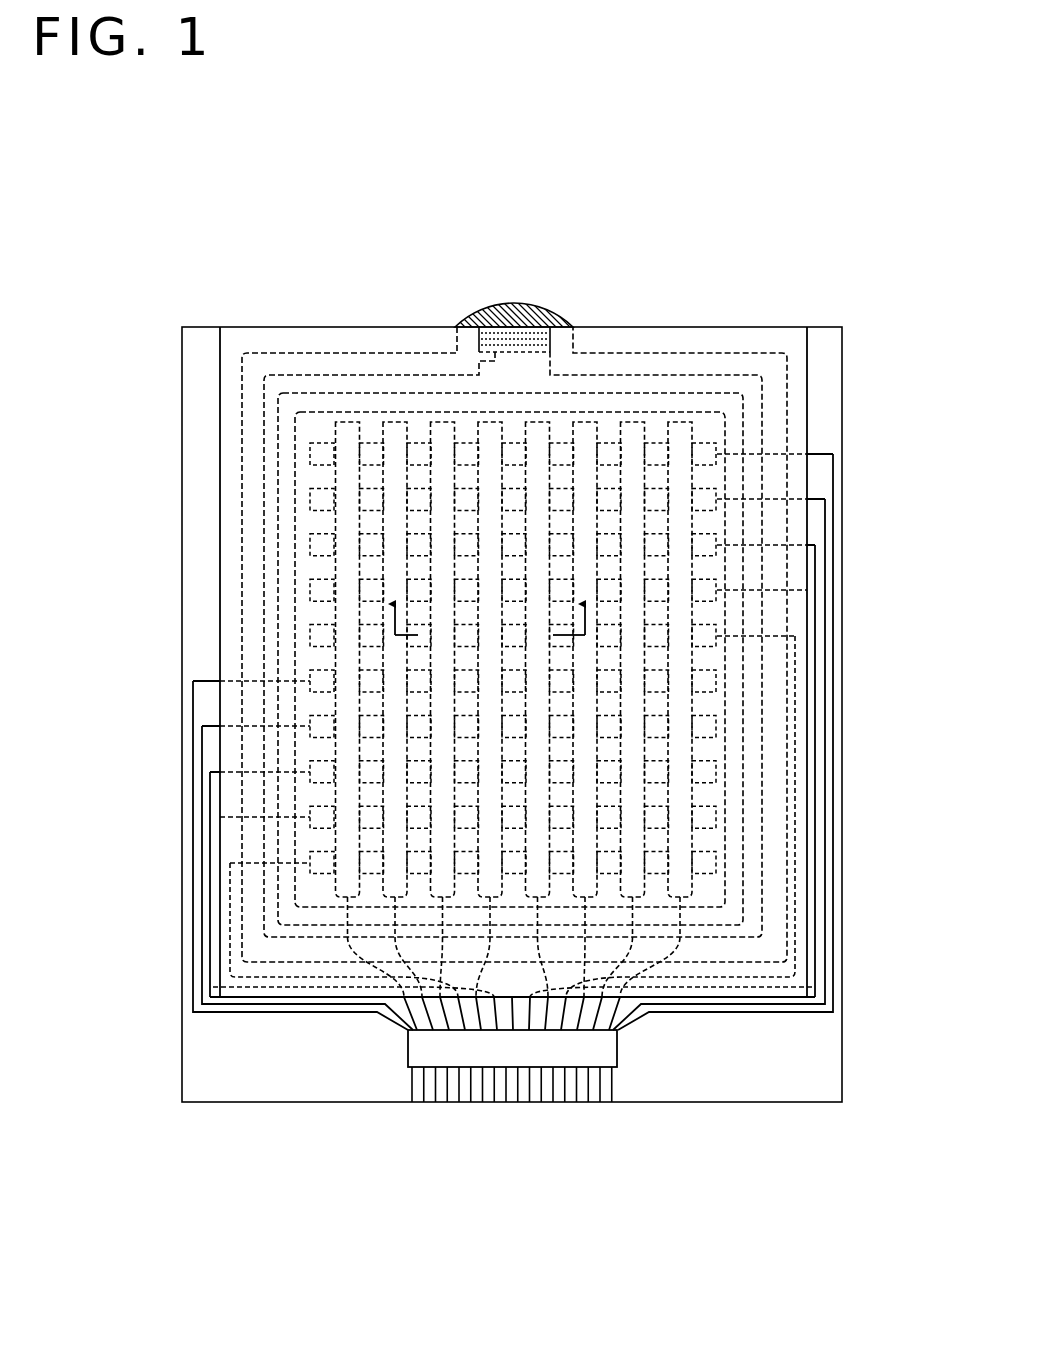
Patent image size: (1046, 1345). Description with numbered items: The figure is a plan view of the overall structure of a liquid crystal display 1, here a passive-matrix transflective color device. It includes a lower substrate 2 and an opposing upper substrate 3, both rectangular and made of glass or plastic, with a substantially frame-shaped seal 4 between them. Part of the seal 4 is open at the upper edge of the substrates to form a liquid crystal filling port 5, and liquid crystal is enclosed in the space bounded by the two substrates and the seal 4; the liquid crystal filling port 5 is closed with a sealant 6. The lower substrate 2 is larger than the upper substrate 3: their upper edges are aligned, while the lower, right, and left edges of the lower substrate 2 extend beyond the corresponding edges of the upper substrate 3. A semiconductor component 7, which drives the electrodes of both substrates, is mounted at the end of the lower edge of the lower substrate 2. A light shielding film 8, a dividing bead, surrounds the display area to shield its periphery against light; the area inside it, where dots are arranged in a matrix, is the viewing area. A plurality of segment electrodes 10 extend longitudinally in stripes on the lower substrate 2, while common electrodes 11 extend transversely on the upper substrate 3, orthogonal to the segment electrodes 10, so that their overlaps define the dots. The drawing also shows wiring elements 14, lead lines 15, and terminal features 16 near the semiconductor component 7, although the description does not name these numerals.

The liquid crystal display 1 is at (524, 212).
The lower substrate 2 is at (213, 1102).
The upper substrate 3 is at (331, 335).
The seal 4 is at (648, 362).
The liquid crystal filling port 5 is at (486, 350).
The sealant 6 is at (528, 306).
The semiconductor component 7 is at (530, 1050).
The light shielding film 8 is at (403, 400).
The segment electrodes 10 is at (347, 423).
The common electrodes 11 is at (310, 456).
The lead wirings 14 is at (830, 580).
The lead-out lines 15 is at (372, 945).
The terminal bumps 16 is at (617, 1085).